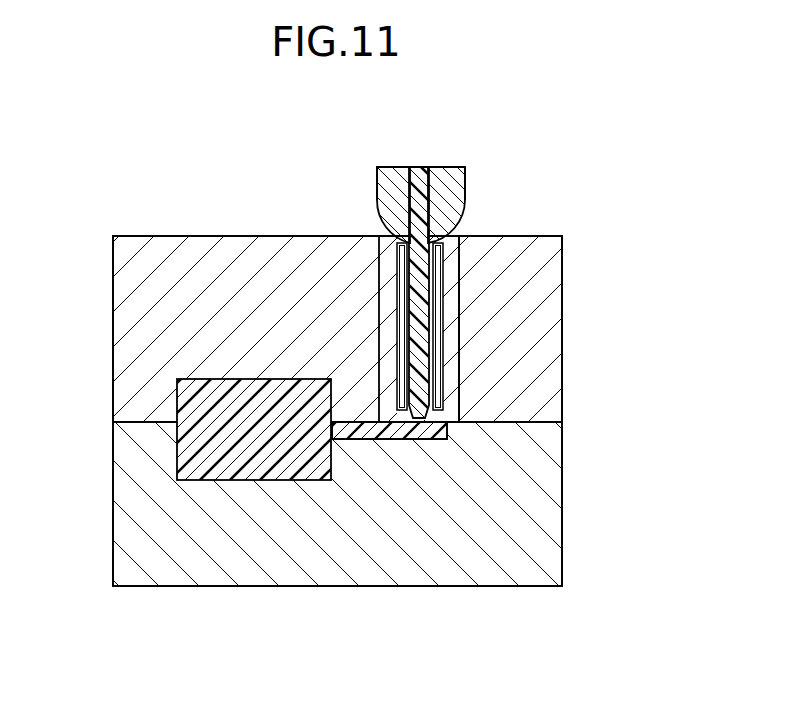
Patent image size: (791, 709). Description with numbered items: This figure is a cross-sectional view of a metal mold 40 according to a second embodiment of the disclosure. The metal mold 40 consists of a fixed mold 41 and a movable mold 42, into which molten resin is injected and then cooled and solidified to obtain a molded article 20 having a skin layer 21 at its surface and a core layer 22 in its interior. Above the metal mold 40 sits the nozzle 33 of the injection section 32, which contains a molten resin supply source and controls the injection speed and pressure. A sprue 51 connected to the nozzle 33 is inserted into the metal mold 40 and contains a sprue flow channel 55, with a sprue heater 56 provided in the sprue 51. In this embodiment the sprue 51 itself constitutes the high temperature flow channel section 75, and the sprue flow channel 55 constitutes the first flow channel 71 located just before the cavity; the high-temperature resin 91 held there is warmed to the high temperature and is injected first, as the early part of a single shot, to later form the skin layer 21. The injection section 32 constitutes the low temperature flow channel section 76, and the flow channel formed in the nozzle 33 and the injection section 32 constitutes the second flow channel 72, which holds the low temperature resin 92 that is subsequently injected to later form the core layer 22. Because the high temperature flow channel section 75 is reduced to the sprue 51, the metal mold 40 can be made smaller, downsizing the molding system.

The molded article 20 is at (308, 638).
The skin layer 21 is at (293, 478).
The core layer 22 is at (252, 428).
The injection section 32 is at (388, 163).
The nozzle 33 is at (377, 187).
The metal mold 40 is at (133, 235).
The fixed mold 41 is at (120, 316).
The movable mold 42 is at (120, 488).
The sprue 51 is at (460, 283).
The sprue flow channel 55 is at (430, 397).
The sprue heater 56 is at (400, 272).
The first flow channel 71 is at (430, 397).
The second flow channel 72 is at (428, 173).
The high temperature flow channel section 75 is at (463, 317).
The low temperature flow channel section 76 is at (468, 180).
The high-temperature resin 91 is at (422, 340).
The low temperature resin 92 is at (421, 168).